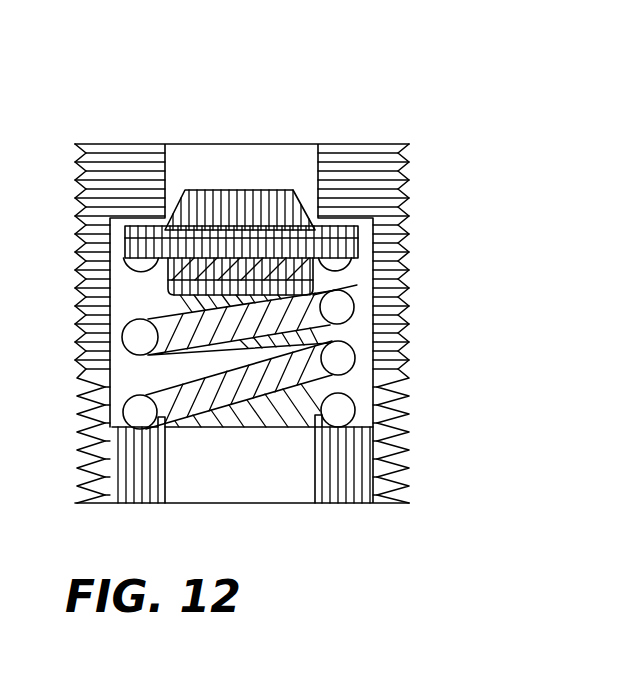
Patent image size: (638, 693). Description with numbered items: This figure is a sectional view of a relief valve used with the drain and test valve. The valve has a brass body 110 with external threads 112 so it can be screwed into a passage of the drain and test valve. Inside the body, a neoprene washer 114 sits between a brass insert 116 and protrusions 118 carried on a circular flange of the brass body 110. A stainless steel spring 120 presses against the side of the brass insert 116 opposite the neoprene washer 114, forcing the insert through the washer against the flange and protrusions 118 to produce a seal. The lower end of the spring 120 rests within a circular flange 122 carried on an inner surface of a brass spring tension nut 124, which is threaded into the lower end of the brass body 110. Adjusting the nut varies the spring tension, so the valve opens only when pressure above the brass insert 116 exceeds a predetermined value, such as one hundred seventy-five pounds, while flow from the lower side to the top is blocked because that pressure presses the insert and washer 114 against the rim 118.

The brass body 110 is at (407, 176).
The external threads 112 is at (405, 222).
The neoprene washer 114 is at (343, 229).
The brass insert 116 is at (348, 257).
The protrusions 118 is at (164, 226).
The stainless steel spring 120 is at (345, 312).
The circular flange 122 is at (316, 428).
The brass spring tension nut 124 is at (337, 496).